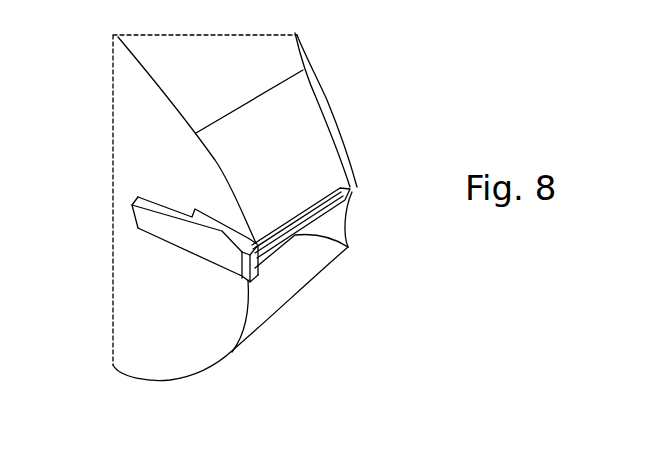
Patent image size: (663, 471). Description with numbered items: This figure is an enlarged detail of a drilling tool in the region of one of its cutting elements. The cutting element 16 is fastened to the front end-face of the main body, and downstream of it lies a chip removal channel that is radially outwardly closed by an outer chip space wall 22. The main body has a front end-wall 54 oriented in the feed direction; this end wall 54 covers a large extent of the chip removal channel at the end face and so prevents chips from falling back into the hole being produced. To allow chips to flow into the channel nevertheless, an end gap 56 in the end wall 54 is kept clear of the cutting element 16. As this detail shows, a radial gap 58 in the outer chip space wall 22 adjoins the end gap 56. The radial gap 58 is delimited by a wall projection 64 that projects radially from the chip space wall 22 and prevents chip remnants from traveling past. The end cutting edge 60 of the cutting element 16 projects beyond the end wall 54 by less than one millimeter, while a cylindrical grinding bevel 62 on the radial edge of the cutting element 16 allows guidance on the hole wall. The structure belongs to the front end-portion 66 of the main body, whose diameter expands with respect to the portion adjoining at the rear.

The outer chip space wall 22 is at (280, 50).
The wall projection 64 is at (287, 117).
The radial gap 58 is at (353, 192).
The cylindrical grinding bevel 62 is at (348, 247).
The front end-portion 66 is at (265, 320).
The end gap 56 is at (223, 231).
The cutting element 16 is at (196, 257).
The end cutting edge 60 is at (140, 222).
The front end-wall 54 is at (138, 327).